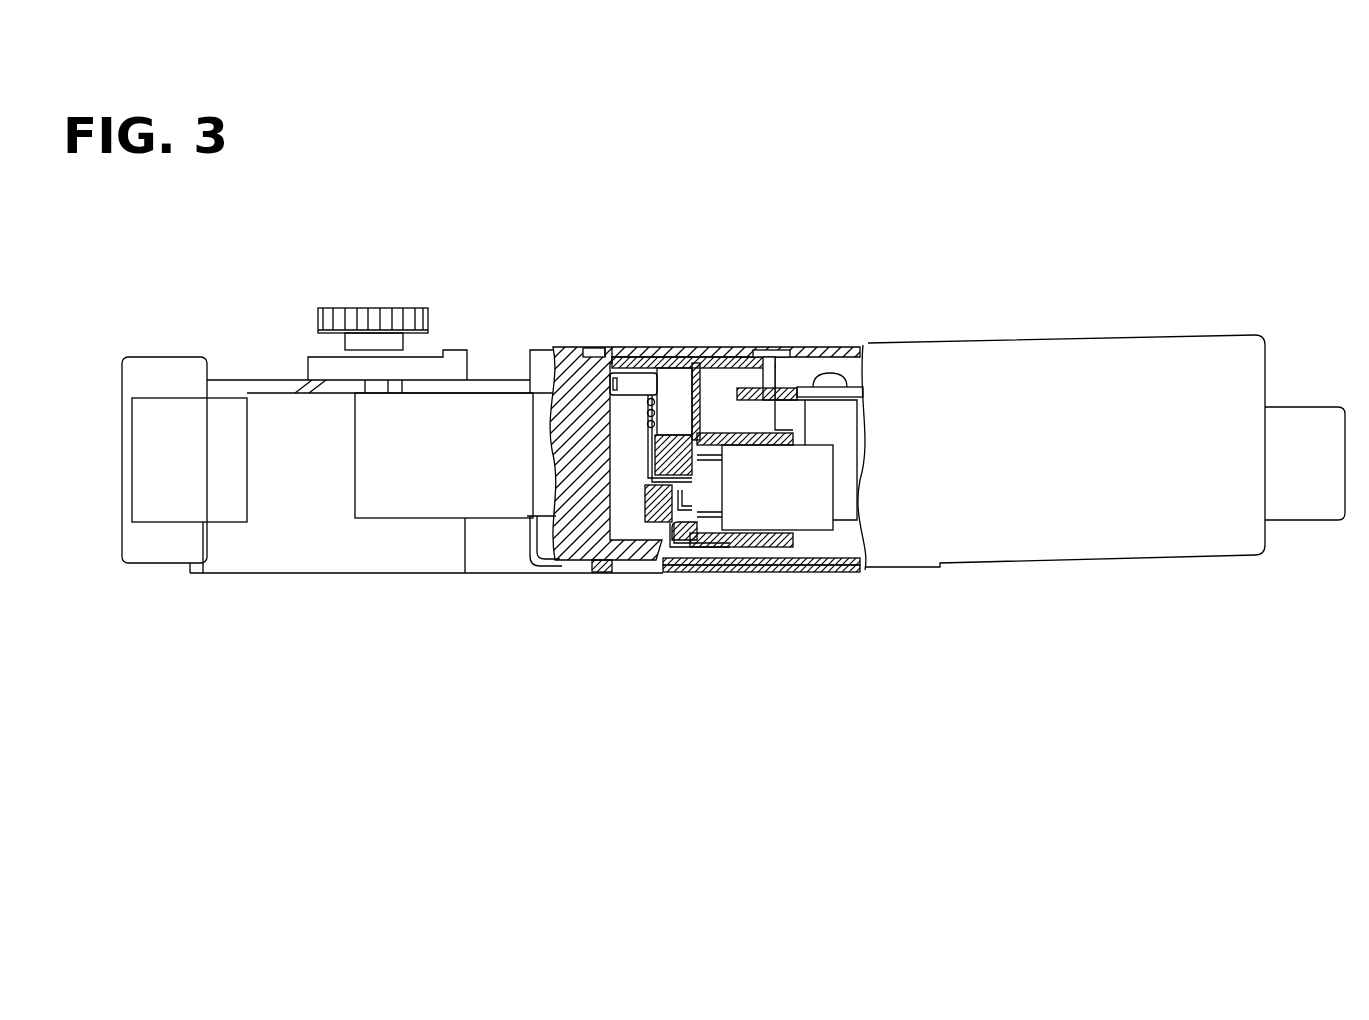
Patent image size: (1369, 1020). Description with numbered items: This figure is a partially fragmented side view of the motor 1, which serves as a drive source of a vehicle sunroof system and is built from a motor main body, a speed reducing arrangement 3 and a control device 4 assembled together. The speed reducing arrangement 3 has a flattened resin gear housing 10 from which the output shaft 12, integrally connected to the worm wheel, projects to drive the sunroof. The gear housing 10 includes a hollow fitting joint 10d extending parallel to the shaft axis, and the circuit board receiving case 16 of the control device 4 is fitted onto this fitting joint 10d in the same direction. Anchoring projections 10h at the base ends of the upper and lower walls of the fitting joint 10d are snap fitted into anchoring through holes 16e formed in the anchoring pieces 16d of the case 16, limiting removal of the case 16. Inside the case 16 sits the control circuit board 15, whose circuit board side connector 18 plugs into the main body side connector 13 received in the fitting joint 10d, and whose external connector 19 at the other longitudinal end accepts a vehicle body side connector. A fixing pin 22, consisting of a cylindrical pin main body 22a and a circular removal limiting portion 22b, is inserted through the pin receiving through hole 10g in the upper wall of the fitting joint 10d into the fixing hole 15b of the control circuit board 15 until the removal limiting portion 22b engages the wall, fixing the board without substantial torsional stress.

The motor 1 is at (1122, 198).
The speed reducing arrangement 3 is at (160, 347).
The control device 4 is at (1155, 328).
The gear housing 10 is at (233, 573).
The fitting joint 10d is at (725, 567).
The pin receiving through hole 10g is at (753, 350).
The anchoring projection 10h is at (612, 347).
The output shaft 12 is at (372, 308).
The main body side connector 13 is at (773, 565).
The control circuit board 15 is at (858, 380).
The fixing hole 15b is at (770, 408).
The circuit board receiving case 16 is at (1065, 350).
The anchoring piece 16d is at (594, 347).
The anchoring through hole 16e is at (652, 347).
The circuit board side connector 18 is at (820, 522).
The external connector 19 is at (1297, 510).
The fixing pin 22 is at (890, 293).
The pin main body 22a is at (780, 368).
The removal limiting portion 22b is at (780, 347).